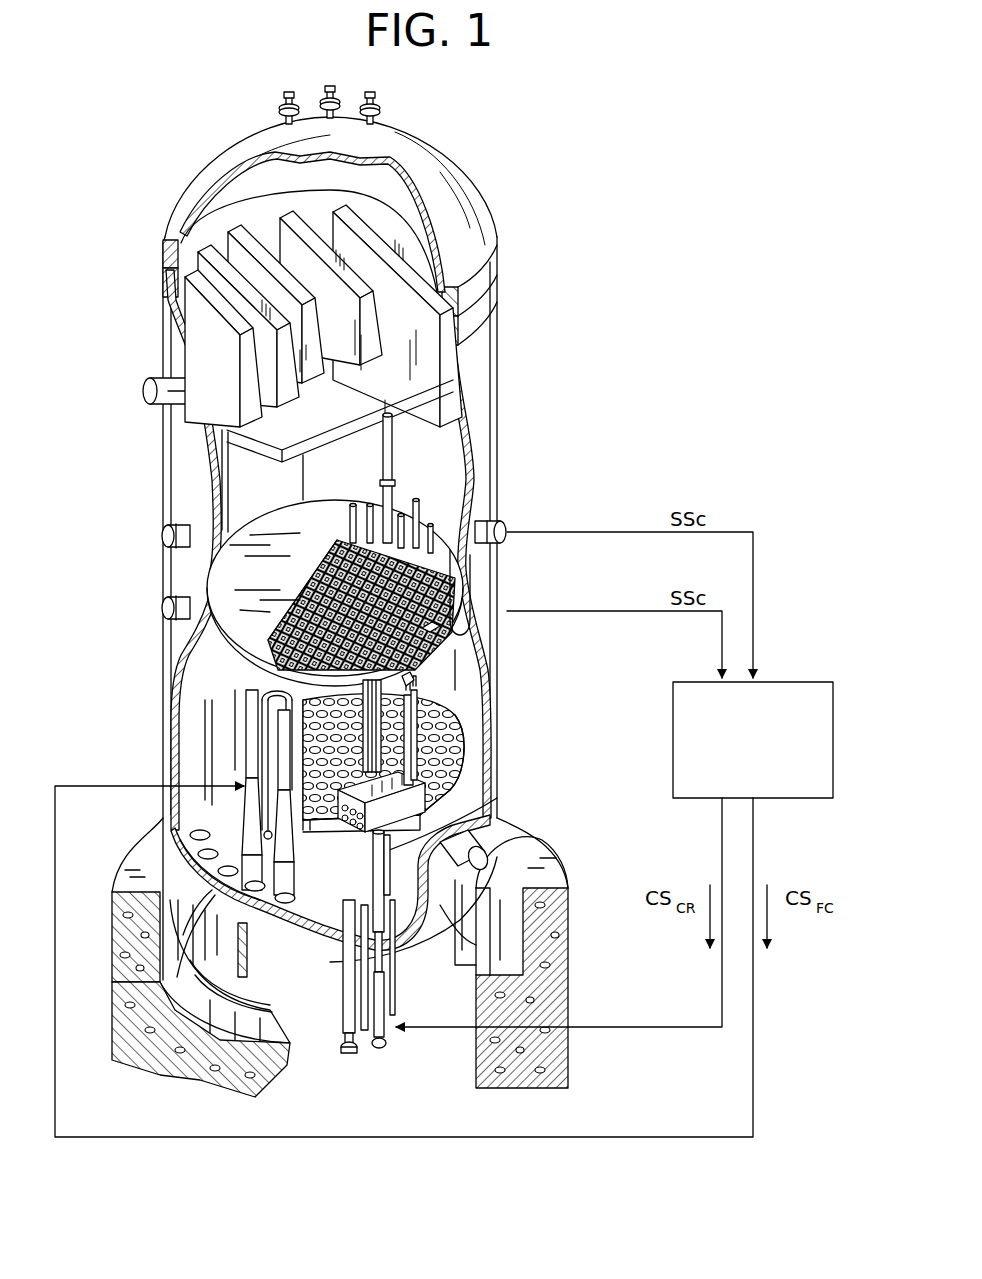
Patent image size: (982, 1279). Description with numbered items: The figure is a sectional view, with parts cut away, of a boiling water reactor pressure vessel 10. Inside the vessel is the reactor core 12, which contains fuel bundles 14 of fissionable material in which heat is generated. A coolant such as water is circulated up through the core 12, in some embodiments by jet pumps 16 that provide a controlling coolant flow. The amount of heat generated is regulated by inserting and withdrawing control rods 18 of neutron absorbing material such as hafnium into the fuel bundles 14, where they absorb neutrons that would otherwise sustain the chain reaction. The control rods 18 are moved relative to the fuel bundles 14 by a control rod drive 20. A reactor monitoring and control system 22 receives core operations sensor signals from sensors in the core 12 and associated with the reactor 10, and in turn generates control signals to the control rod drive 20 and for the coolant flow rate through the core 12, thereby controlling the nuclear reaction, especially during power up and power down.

The reactor pressure vessel 10 is at (534, 172).
The reactor core 12 is at (416, 681).
The fuel bundles 14 is at (420, 700).
The jet pumps 16 is at (250, 748).
The control rods 18 is at (380, 852).
The control rod drive 20 is at (380, 1048).
The reactor monitoring and control system 22 is at (790, 681).